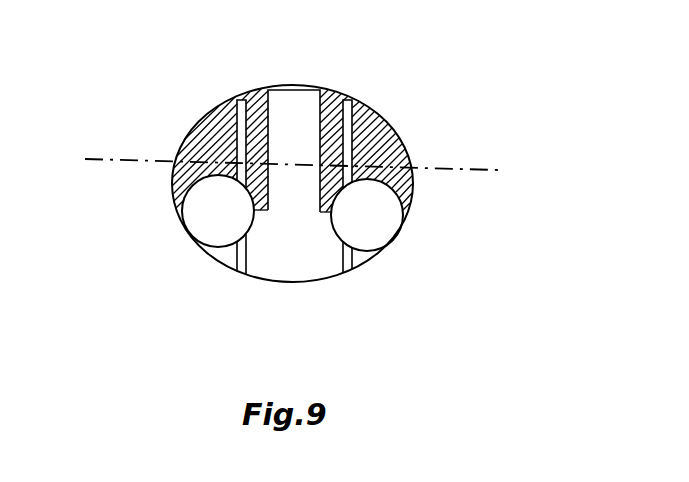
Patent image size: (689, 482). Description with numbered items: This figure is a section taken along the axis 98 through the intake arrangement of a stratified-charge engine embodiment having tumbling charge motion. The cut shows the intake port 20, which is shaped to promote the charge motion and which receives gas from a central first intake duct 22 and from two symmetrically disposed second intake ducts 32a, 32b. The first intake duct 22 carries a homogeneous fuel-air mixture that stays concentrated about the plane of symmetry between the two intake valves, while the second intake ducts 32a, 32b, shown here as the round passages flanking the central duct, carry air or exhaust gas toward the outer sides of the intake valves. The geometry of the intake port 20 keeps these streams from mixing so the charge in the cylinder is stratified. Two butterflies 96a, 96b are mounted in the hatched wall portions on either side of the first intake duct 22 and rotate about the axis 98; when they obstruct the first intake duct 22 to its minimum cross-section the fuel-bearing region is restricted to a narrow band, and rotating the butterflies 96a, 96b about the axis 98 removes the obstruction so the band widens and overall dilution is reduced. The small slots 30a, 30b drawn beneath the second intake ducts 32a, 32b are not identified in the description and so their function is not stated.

The intake port 20 is at (413, 192).
The first intake duct 22 is at (292, 98).
The butterfly 96a is at (227, 128).
The butterfly 96b is at (370, 122).
The left pin 30a is at (240, 263).
The right pin 30b is at (345, 263).
The second intake duct 32a is at (215, 213).
The second intake duct 32b is at (372, 217).
The axis 98 is at (135, 160).